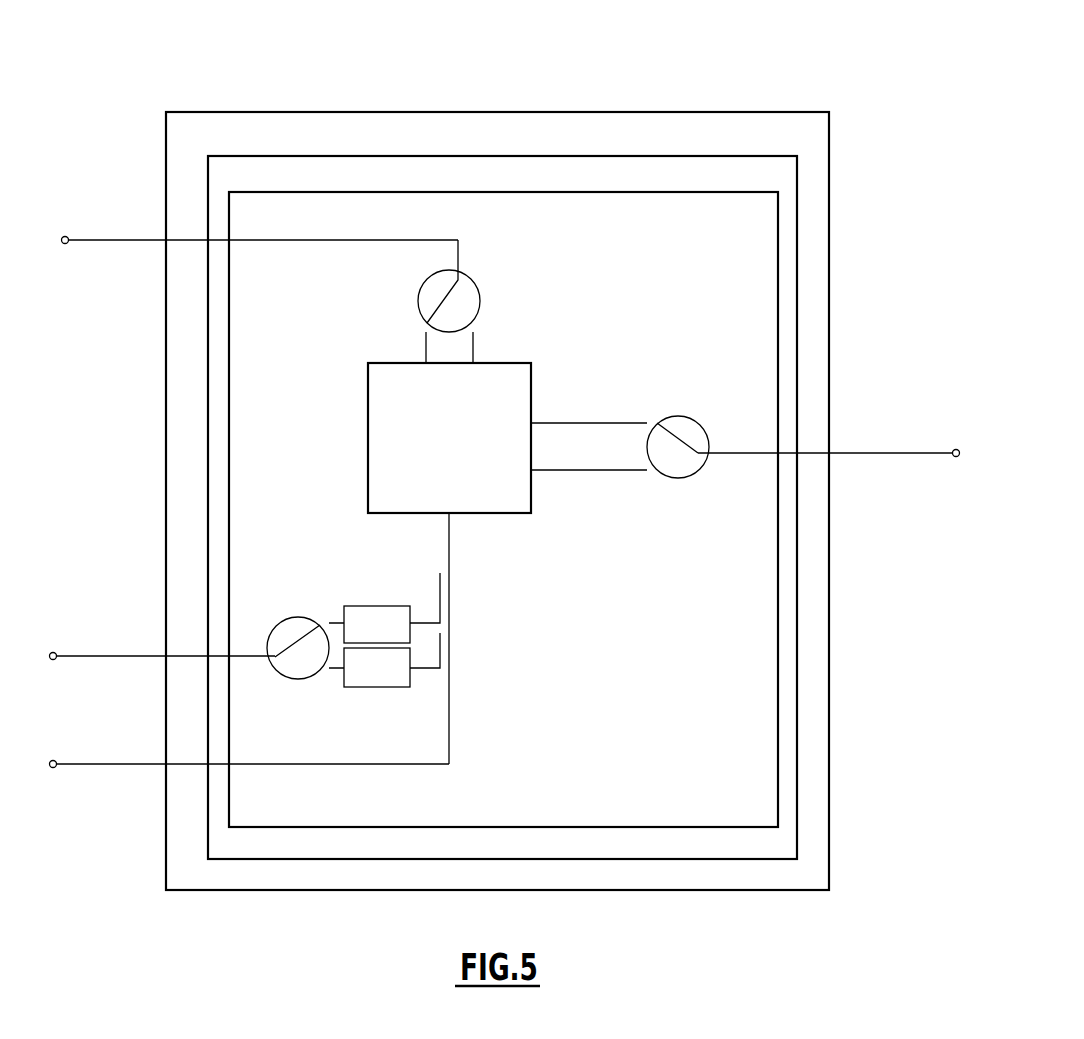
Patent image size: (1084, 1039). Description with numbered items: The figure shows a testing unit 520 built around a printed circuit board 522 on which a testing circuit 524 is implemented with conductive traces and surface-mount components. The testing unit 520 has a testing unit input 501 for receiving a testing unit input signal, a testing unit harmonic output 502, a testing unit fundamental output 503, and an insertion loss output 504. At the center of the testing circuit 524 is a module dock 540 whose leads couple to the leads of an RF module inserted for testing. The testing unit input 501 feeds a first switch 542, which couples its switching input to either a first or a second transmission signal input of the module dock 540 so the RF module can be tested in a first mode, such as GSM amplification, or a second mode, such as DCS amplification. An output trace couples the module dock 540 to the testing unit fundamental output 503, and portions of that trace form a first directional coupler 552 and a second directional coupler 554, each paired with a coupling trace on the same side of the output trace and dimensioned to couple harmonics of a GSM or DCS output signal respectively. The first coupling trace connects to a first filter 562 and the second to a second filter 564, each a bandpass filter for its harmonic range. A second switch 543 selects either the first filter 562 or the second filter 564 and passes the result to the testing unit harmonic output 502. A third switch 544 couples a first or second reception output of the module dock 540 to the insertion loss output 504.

The testing unit input 501 is at (67, 236).
The testing unit harmonic output 502 is at (55, 652).
The testing unit fundamental output 503 is at (55, 760).
The insertion loss output 504 is at (955, 449).
The testing unit 520 is at (322, 112).
The printed circuit board (PCB) 522 is at (295, 156).
The testing circuit 524 is at (229, 210).
The module dock 540 is at (386, 363).
The first switch 542 is at (480, 292).
The second switch 543 is at (297, 617).
The third switch 544 is at (700, 426).
The first directional coupler 552 is at (457, 593).
The second directional coupler 554 is at (457, 653).
The first filter 562 is at (382, 606).
The second filter 564 is at (382, 687).